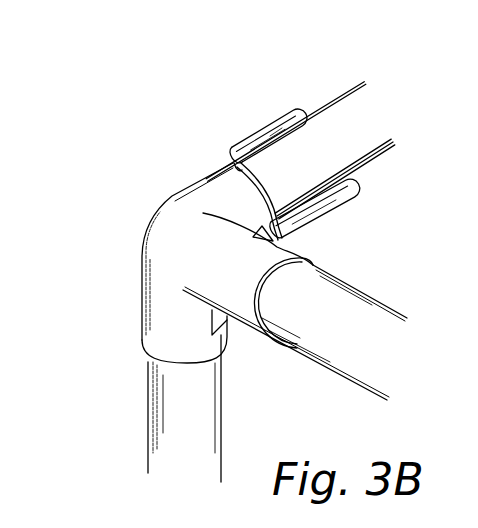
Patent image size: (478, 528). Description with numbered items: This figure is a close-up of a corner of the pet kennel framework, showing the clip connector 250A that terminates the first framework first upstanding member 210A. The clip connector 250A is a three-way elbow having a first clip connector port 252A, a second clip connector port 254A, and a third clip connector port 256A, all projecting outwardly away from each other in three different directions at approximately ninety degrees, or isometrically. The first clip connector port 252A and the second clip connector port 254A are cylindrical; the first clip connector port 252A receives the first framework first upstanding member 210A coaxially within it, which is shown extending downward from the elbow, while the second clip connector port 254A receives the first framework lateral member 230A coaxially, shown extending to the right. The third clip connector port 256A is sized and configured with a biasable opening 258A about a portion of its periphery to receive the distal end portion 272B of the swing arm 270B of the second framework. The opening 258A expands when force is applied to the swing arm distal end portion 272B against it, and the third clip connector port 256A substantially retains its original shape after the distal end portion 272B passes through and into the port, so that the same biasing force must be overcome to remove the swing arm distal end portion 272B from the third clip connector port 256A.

The clip connector 250A is at (138, 198).
The first clip connector port 252A is at (158, 312).
The second clip connector port 254A is at (265, 262).
The third clip connector port 256A is at (237, 150).
The biasable opening 258A is at (277, 137).
The swing arm 270B is at (340, 110).
The distal end portion 272B is at (308, 162).
The first framework lateral member 230A is at (348, 343).
The first framework first upstanding member 210A is at (173, 412).